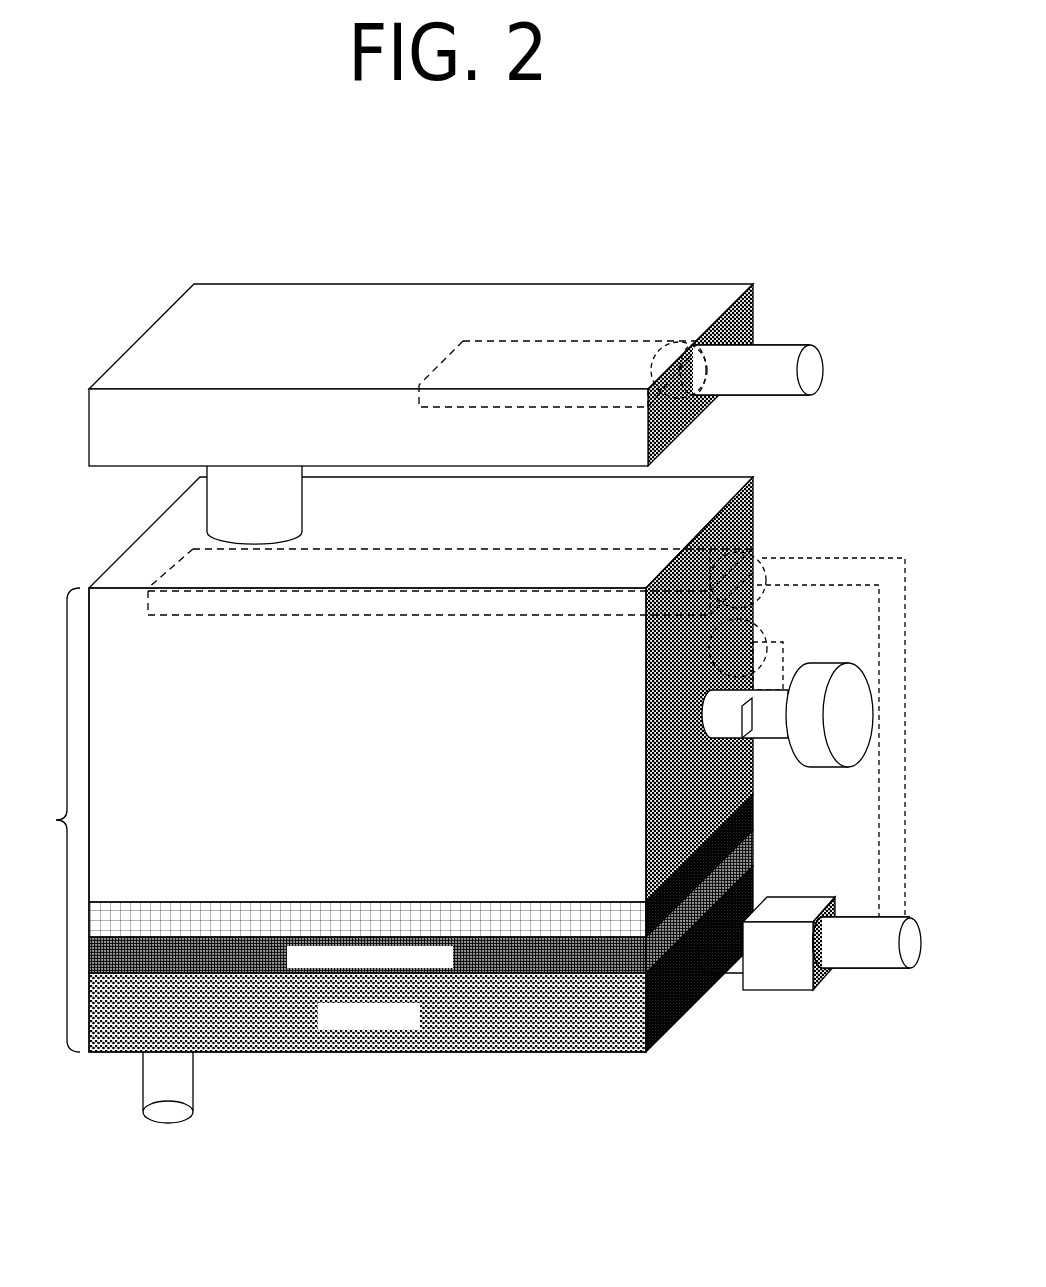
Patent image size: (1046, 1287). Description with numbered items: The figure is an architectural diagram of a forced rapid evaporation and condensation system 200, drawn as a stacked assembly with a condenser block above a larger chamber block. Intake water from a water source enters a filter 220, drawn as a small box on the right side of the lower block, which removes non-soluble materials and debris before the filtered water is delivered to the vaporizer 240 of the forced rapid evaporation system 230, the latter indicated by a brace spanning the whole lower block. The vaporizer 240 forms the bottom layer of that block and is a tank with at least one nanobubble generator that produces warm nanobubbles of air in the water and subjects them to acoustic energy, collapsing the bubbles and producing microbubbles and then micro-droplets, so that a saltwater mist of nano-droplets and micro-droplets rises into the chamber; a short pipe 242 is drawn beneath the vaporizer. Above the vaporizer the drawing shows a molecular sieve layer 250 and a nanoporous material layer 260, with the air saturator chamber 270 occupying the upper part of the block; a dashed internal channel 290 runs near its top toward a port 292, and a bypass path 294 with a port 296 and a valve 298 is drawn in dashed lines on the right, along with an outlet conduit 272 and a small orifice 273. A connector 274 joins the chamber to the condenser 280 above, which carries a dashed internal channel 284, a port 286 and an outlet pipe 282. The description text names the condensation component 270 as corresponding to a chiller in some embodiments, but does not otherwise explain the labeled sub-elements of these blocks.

The forced rapid evaporation and condensation system 200 is at (118, 123).
The filter 220 is at (778, 990).
The forced rapid evaporation system 230 is at (325, 820).
The vaporizer 240 is at (497, 1053).
The vaporizer inlet port 242 is at (187, 1120).
The molecular sieve 250 is at (753, 848).
The nanoporous material 260 is at (753, 813).
The condensation component 270 is at (753, 502).
The outlet conduit 272 is at (788, 750).
The outlet orifice 273 is at (740, 718).
The condenser connection conduit 274 is at (303, 502).
The condenser 280 is at (473, 283).
The condenser outlet pipe 282 is at (785, 343).
The condenser internal channel 284 is at (578, 342).
The condenser outlet port 286 is at (678, 337).
The saturator internal channel 290 is at (478, 544).
The channel outlet port 292 is at (762, 550).
The bypass line 294 is at (880, 848).
The bypass port 296 is at (762, 623).
The bypass valve 298 is at (783, 657).